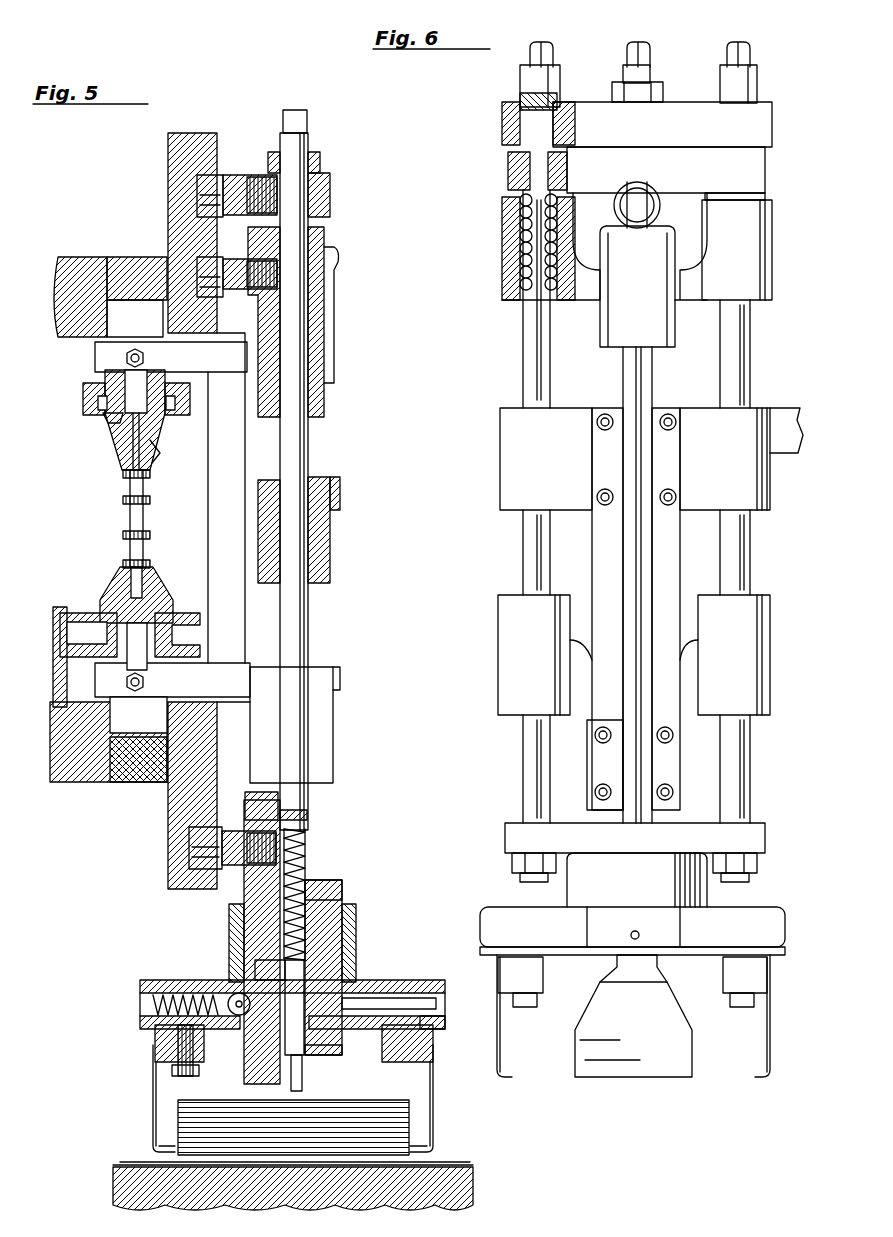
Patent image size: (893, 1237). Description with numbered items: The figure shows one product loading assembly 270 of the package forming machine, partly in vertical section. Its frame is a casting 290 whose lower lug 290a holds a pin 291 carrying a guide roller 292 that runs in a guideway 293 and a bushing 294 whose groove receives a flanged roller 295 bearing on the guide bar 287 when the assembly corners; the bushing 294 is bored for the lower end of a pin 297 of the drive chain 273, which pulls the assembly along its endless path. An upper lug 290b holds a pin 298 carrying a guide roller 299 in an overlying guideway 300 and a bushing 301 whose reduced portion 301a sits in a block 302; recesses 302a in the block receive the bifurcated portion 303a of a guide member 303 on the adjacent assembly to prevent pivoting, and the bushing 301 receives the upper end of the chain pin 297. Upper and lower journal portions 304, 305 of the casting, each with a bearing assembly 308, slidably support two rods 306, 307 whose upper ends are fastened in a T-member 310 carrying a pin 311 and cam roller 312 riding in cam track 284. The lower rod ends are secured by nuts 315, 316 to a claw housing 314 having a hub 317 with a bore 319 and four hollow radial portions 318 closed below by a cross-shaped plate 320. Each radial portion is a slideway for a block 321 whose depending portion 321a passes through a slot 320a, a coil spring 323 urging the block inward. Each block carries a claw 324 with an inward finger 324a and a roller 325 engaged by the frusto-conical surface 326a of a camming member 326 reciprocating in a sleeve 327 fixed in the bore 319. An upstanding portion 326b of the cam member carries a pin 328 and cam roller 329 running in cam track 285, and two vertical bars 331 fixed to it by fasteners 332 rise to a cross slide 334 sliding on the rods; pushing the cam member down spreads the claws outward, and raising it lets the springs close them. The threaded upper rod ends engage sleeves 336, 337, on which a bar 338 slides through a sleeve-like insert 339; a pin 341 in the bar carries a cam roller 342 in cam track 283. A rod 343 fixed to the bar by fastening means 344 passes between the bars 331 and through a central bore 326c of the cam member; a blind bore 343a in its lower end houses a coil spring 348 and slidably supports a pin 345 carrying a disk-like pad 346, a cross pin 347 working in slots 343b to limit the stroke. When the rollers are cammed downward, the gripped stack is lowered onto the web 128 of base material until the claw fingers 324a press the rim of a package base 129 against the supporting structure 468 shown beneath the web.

In FIG. 5, the web of base material 128 is at (150, 1165).
In FIG. 5, the package base 129 is at (400, 1165).
In FIG. 5, the product loading assembly 270 is at (335, 712).
In FIG. 5, the drive chain 273 is at (130, 518).
In FIG. 5, the cam track 283 is at (197, 190).
In FIG. 5, the cam track 284 is at (197, 262).
In FIG. 5, the cam track 285 is at (195, 860).
In FIG. 5, the guide bar 287 is at (80, 625).
In FIG. 5, the casting 290 is at (213, 519).
In FIG. 5, the lower lug 290a is at (103, 677).
In FIG. 5, the upper lug 290b is at (100, 362).
In FIG. 5, the pin 291 is at (143, 660).
In FIG. 5, the guide roller 292 is at (77, 782).
In FIG. 5, the guideway 293 is at (140, 740).
In FIG. 5, the bushing 294 is at (112, 590).
In FIG. 5, the flanged roller 295 is at (190, 613).
In FIG. 5, the chain pin 297 is at (120, 575).
In FIG. 5, the pin 298 is at (138, 383).
In FIG. 5, the guide roller 299 is at (115, 333).
In FIG. 5, the guideway 300 is at (137, 297).
In FIG. 5, the bushing 301 is at (110, 450).
In FIG. 5, the reduced-in-diameter portion 301a is at (108, 418).
In FIG. 5, the block 302 is at (165, 455).
In FIG. 5, the recesses 302a is at (98, 410).
In FIG. 6, the guide member 303 is at (780, 408).
In FIG. 5, the bifurcated portion 303a is at (83, 392).
In FIG. 6, the upper journal portion 304 is at (500, 286).
In FIG. 6, the lower journal portion 305 is at (498, 633).
In FIG. 6, the rod 306 is at (523, 347).
In FIG. 6, the rod 307 is at (722, 362).
In FIG. 6, the bearing assembly 308 is at (502, 248).
In FIG. 5, the T-member 310 is at (325, 390).
In FIG. 6, the T-member 310 is at (623, 323).
In FIG. 5, the pin 311 is at (277, 272).
In FIG. 5, the cam roller 312 is at (262, 300).
In FIG. 6, the claw housing 314 is at (512, 842).
In FIG. 6, the nut 315 is at (512, 862).
In FIG. 6, the nut 316 is at (757, 862).
In FIG. 6, the central hub portion 317 is at (567, 890).
In FIG. 6, the radially extending housing portions 318 is at (635, 915).
In FIG. 5, the bore 319 is at (229, 930).
In FIG. 5, the plate 320 is at (435, 1029).
In FIG. 6, the plate 320 is at (480, 952).
In FIG. 5, the slots 320a is at (200, 1045).
In FIG. 5, the block 321 is at (362, 992).
In FIG. 5, the depending portion 321a is at (155, 1045).
In FIG. 6, the depending portion 321a is at (540, 968).
In FIG. 5, the coil spring 323 is at (150, 1003).
In FIG. 5, the claw 324 is at (153, 1092).
In FIG. 6, the claw 324 is at (690, 1048).
In FIG. 5, the finger portion 324a is at (158, 1145).
In FIG. 6, the finger portion 324a is at (506, 1075).
In FIG. 5, the roller 325 is at (240, 1016).
In FIG. 5, the camming member 326 is at (342, 882).
In FIG. 5, the frusto-conical surface 326a is at (310, 1055).
In FIG. 5, the upstanding portion 326b is at (280, 800).
In FIG. 6, the upstanding portion 326b is at (587, 750).
In FIG. 5, the bore 326c is at (308, 880).
In FIG. 5, the sleeve 327 is at (356, 906).
In FIG. 5, the pin 328 is at (240, 870).
In FIG. 5, the cam roller 329 is at (189, 838).
In FIG. 6, the vertical bars 331 is at (597, 557).
In FIG. 6, the fasteners 332 is at (674, 736).
In FIG. 5, the cross slide 334 is at (331, 520).
In FIG. 6, the cross slide 334 is at (500, 457).
In FIG. 6, the sleeve 336 is at (520, 78).
In FIG. 6, the sleeve 337 is at (722, 77).
In FIG. 5, the bar 338 is at (330, 200).
In FIG. 6, the bar 338 is at (593, 104).
In FIG. 6, the sleeve-like insert 339 is at (508, 150).
In FIG. 5, the pin 341 is at (237, 173).
In FIG. 5, the cam roller 342 is at (203, 202).
In FIG. 5, the rod 343 is at (308, 600).
In FIG. 6, the rod 343 is at (623, 385).
In FIG. 5, the blind bore 343a is at (300, 1038).
In FIG. 5, the slots 343b is at (262, 968).
In FIG. 5, the fastening means 344 is at (320, 165).
In FIG. 5, the pin 345 is at (291, 1075).
In FIG. 5, the pad 346 is at (330, 1098).
In FIG. 5, the pin 347 is at (300, 975).
In FIG. 5, the coil spring 348 is at (306, 838).
In FIG. 5, the machine bed 468 is at (473, 1181).